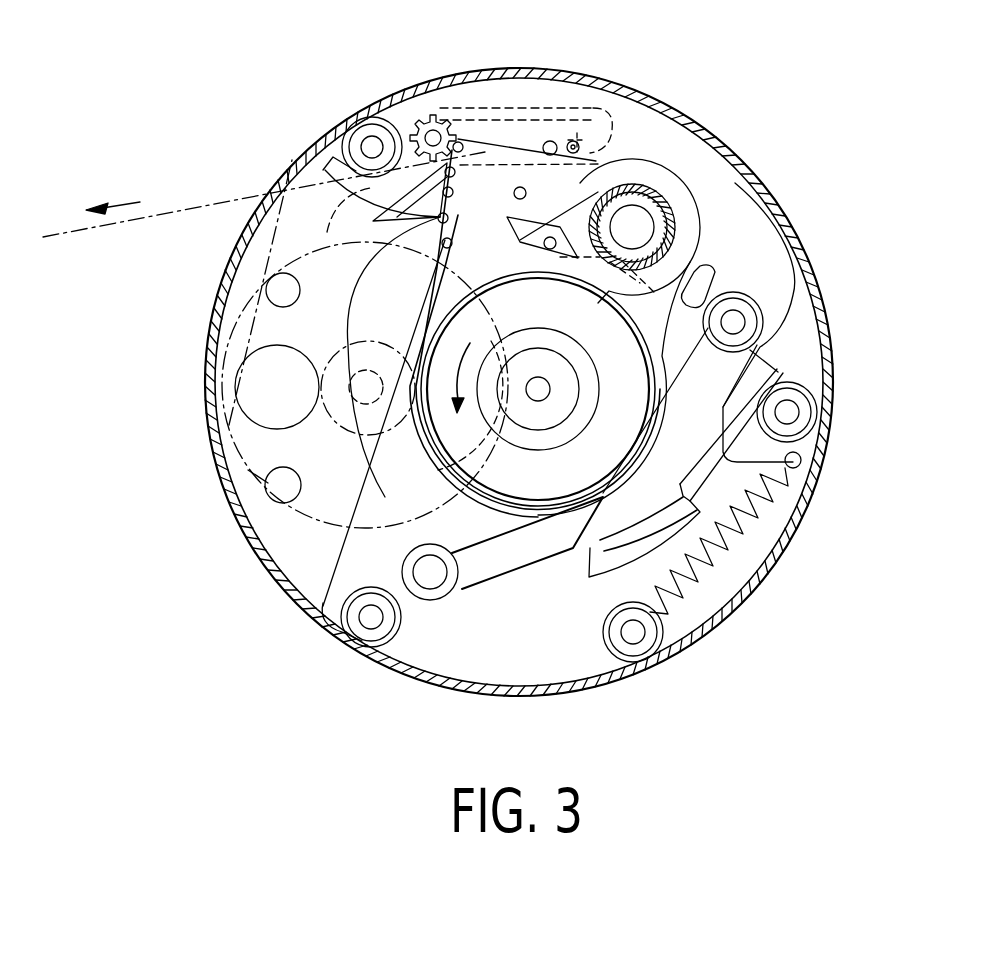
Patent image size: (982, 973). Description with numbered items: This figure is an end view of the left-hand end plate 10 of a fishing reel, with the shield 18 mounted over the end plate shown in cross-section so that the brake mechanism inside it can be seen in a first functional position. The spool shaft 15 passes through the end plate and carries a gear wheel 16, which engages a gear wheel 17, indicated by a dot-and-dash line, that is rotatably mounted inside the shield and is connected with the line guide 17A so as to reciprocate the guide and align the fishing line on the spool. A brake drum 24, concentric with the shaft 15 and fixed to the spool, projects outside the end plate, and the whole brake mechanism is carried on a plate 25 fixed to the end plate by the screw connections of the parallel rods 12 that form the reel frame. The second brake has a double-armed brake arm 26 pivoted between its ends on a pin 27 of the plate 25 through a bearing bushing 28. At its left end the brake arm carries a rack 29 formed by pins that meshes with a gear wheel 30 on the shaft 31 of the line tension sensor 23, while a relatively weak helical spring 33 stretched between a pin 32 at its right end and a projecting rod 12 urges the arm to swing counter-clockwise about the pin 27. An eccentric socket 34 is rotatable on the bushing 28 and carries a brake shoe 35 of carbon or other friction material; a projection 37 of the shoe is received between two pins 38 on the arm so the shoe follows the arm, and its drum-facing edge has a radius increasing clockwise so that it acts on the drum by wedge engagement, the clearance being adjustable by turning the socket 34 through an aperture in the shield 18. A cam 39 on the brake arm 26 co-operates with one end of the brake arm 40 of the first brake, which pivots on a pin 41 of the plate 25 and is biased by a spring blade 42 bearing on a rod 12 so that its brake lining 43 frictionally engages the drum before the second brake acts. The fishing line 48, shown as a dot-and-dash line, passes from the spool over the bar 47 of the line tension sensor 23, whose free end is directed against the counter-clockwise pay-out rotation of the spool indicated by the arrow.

The end plate 10 is at (266, 540).
The rods 12 is at (795, 415).
The shaft 15 is at (545, 390).
The gear wheel 16 is at (560, 360).
The gear wheel 17 is at (228, 500).
The line guide 17A is at (245, 240).
The shield 18 is at (802, 243).
The line tension sensor 23 is at (478, 107).
The brake drum 24 is at (440, 327).
The plate 25 is at (445, 462).
The brake arm 26 is at (717, 193).
The pin 27 is at (644, 213).
The bearing bushing 28 is at (637, 215).
The rack 29 is at (395, 222).
The gear wheel 30 is at (425, 120).
The shaft 31 is at (434, 126).
The pin 32 is at (800, 463).
The helical spring 33 is at (753, 517).
The socket 34 is at (622, 197).
The brake shoe 35 is at (692, 222).
The projection 37 is at (547, 203).
The pins 38 is at (514, 193).
The cam 39 is at (712, 277).
The brake arm 40 is at (513, 560).
The pin 41 is at (432, 578).
The spring blade 42 is at (775, 378).
The brake lining 43 is at (574, 549).
The bar 47 is at (578, 135).
The fishing line 48 is at (105, 232).